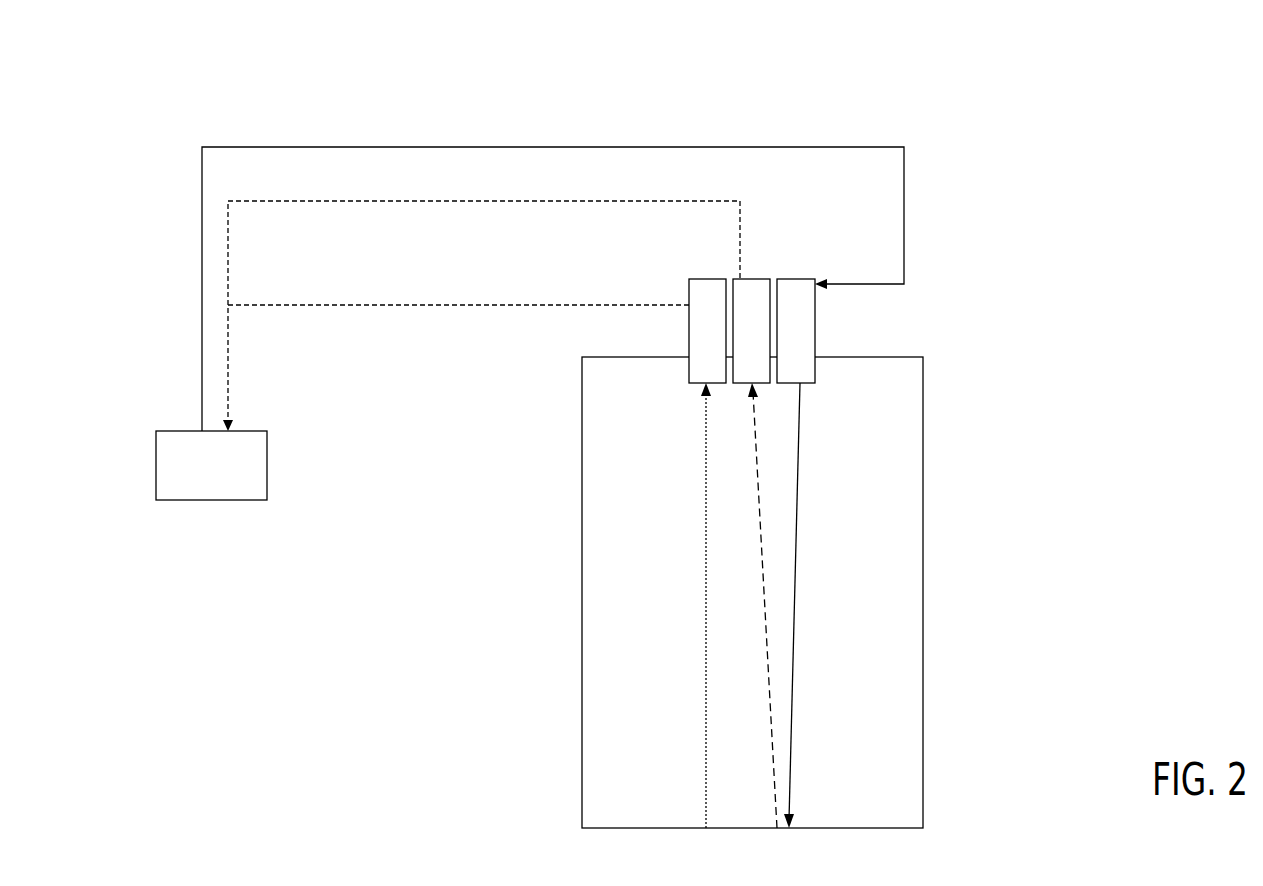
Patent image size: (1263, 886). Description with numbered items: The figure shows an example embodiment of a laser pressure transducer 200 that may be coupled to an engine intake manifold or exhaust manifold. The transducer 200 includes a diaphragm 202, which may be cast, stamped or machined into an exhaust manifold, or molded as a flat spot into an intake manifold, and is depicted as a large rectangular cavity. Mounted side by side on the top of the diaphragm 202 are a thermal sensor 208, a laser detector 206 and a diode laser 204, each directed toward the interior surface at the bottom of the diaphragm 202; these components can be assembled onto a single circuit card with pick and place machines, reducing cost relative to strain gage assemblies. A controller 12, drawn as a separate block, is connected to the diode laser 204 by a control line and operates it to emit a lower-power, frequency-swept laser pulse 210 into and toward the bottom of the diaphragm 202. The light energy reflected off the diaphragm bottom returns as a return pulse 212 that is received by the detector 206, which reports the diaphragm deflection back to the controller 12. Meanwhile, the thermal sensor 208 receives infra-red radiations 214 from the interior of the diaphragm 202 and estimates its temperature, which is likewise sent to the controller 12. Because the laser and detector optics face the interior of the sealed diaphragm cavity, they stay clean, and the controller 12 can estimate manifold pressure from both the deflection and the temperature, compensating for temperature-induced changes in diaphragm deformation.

The laser pressure transducer 200 is at (116, 74).
The controller 12 is at (211, 465).
The diaphragm 202 is at (903, 357).
The diode laser 204 is at (800, 279).
The laser detector 206 is at (752, 279).
The thermal sensor 208 is at (707, 279).
The laser pulse 210 is at (796, 560).
The return pulse 212 is at (767, 600).
The infra-red radiations 214 is at (706, 555).